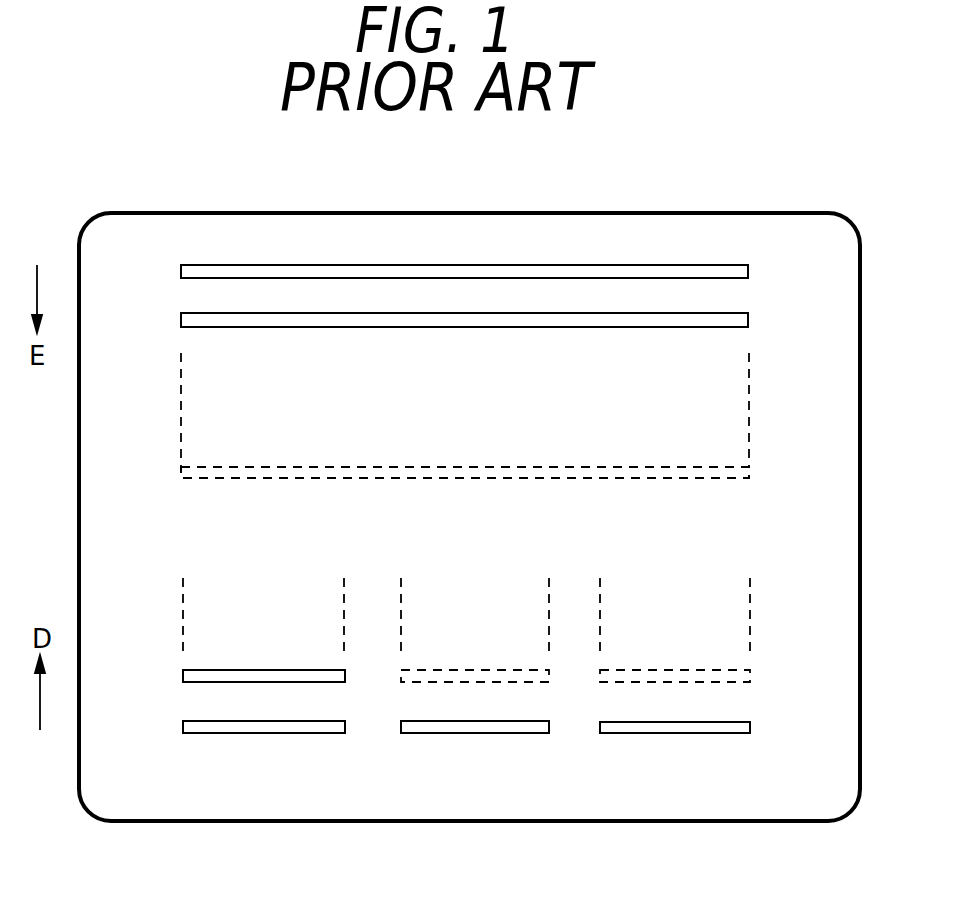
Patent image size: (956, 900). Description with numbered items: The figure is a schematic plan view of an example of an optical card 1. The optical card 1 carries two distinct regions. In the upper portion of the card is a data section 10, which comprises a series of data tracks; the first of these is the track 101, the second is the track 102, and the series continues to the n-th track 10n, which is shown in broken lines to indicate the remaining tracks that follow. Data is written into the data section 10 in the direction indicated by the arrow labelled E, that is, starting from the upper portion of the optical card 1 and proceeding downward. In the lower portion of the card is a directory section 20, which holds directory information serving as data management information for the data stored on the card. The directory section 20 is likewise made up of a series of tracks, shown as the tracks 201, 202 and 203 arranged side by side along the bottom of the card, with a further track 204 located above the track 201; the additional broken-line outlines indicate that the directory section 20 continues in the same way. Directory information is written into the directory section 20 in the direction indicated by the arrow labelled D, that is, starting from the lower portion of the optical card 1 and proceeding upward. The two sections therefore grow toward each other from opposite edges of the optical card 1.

The optical card 1 is at (735, 823).
The data section 10 is at (170, 253).
The data track 101 is at (748, 272).
The data track 102 is at (748, 320).
The data track 10n is at (749, 472).
The directory section 20 is at (768, 572).
The directory track 201 is at (315, 733).
The directory track 202 is at (530, 733).
The directory track 203 is at (713, 733).
The directory track 204 is at (183, 675).